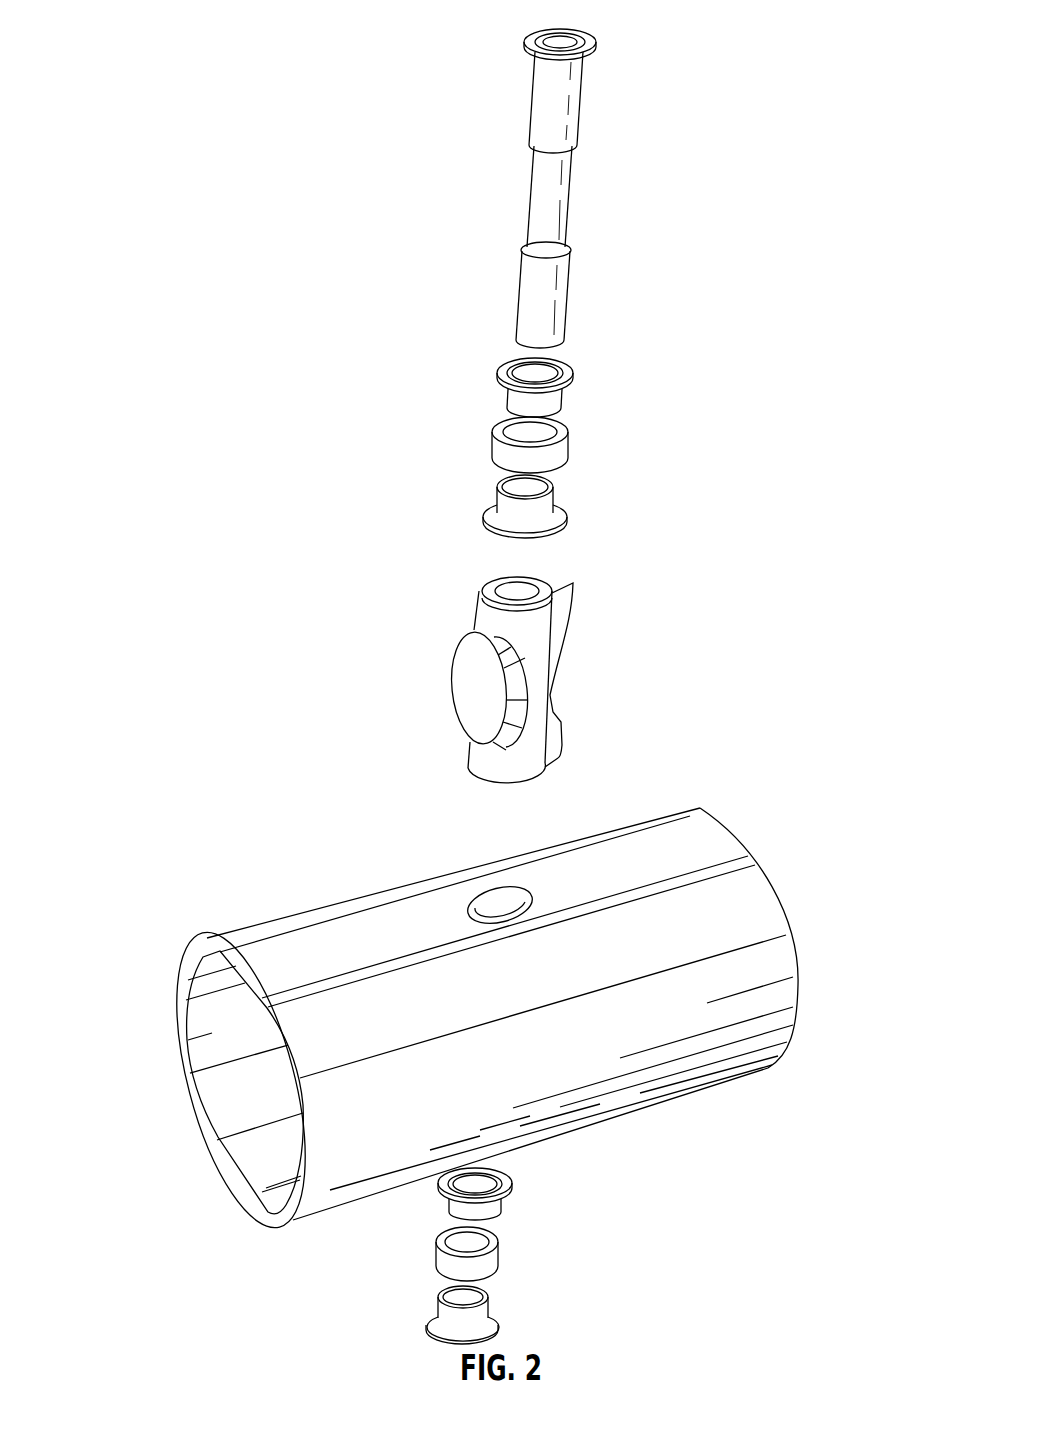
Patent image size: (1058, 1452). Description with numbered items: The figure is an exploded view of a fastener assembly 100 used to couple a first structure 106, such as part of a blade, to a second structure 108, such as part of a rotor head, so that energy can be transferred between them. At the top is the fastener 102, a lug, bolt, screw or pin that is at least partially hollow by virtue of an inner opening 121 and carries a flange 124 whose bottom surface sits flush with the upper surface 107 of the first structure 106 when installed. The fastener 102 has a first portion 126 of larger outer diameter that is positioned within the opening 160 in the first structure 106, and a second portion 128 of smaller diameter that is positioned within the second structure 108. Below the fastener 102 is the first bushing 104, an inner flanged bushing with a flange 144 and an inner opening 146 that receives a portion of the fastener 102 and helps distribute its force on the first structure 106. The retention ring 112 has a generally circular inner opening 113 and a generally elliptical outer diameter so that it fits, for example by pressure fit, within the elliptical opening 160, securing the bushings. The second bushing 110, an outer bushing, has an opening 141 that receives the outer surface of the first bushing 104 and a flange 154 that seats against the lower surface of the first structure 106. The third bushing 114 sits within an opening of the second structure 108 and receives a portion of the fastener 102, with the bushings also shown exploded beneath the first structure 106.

The fastener assembly 100 is at (574, 342).
The fastener 102 is at (553, 176).
The first bushing 104 is at (532, 842).
The first structure 106 is at (474, 1014).
The upper surface 107 is at (593, 873).
The second structure 108 is at (520, 669).
The second bushing 110 is at (531, 849).
The retention ring 112 is at (538, 839).
The inner opening 113 is at (517, 432).
The third bushing 114 is at (490, 587).
The inner opening 121 is at (556, 36).
The flange 124 is at (596, 42).
The first portion 126 is at (571, 70).
The second portion 128 is at (544, 185).
The opening 141 is at (527, 490).
The flange 144 is at (562, 373).
The inner opening 146 is at (545, 378).
The flange 154 is at (563, 513).
The opening 160 is at (498, 898).